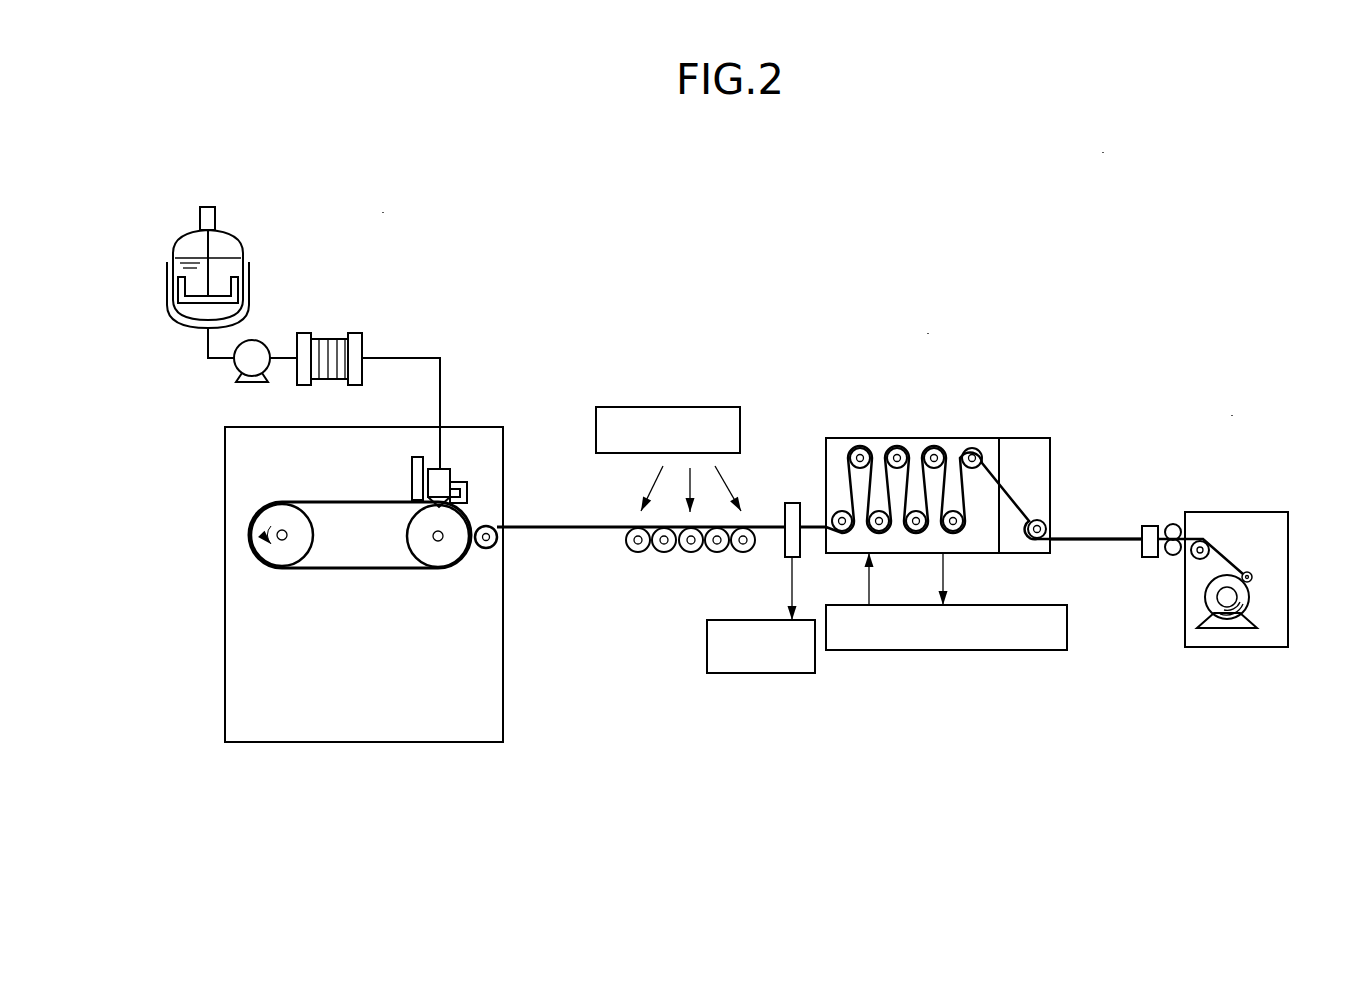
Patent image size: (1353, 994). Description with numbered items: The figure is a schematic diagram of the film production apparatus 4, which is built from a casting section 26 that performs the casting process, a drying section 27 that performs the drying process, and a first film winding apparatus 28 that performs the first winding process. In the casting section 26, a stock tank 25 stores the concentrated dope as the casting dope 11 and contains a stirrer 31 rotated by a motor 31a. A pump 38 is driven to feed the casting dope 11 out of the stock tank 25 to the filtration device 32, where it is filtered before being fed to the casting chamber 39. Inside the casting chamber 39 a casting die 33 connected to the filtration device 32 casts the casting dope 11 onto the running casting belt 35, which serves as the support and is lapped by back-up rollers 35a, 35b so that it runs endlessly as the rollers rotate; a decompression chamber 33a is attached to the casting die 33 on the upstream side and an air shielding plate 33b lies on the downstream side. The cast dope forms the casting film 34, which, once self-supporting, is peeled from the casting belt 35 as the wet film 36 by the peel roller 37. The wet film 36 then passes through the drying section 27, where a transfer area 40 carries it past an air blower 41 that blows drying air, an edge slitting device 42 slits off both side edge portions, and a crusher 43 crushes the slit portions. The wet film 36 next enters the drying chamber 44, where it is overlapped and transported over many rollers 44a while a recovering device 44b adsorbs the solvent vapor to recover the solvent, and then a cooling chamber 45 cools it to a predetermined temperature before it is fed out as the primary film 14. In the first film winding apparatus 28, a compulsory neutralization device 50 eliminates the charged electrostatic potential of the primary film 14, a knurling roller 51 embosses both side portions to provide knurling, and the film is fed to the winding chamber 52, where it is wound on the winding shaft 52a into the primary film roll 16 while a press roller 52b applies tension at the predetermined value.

The film production apparatus 4 is at (1104, 152).
The casting dope 11 is at (223, 272).
The primary film 14 is at (1095, 548).
The primary film roll 16 is at (1200, 598).
The stock tank 25 is at (186, 233).
The casting section 26 is at (383, 212).
The drying section 27 is at (928, 333).
The first film winding apparatus 28 is at (1232, 415).
The stirrer 31 is at (193, 298).
The motor 31a is at (208, 206).
The filtration device 32 is at (362, 347).
The casting die 33 is at (451, 470).
The decompression chamber 33a is at (467, 486).
The air shielding plate 33b is at (412, 459).
The casting film 34 is at (370, 499).
The casting belt 35 is at (340, 569).
The back-up roller 35a is at (432, 556).
The back-up roller 35b is at (265, 552).
The wet film 36 is at (564, 530).
The peel roller 37 is at (483, 550).
The pump 38 is at (238, 364).
The casting chamber 39 is at (225, 472).
The transfer area 40 is at (766, 551).
The air blower 41 is at (742, 430).
The edge slitting device 42 is at (792, 513).
The crusher 43 is at (760, 674).
The drying chamber 44 is at (966, 436).
The rollers 44a is at (864, 450).
The recovering device 44b is at (902, 650).
The cooling chamber 45 is at (1013, 436).
The compulsory neutralization device 50 is at (1150, 526).
The knurling roller 51 is at (1173, 525).
The winding chamber 52 is at (1237, 512).
The winding shaft 52a is at (1232, 596).
The press roller 52b is at (1247, 570).